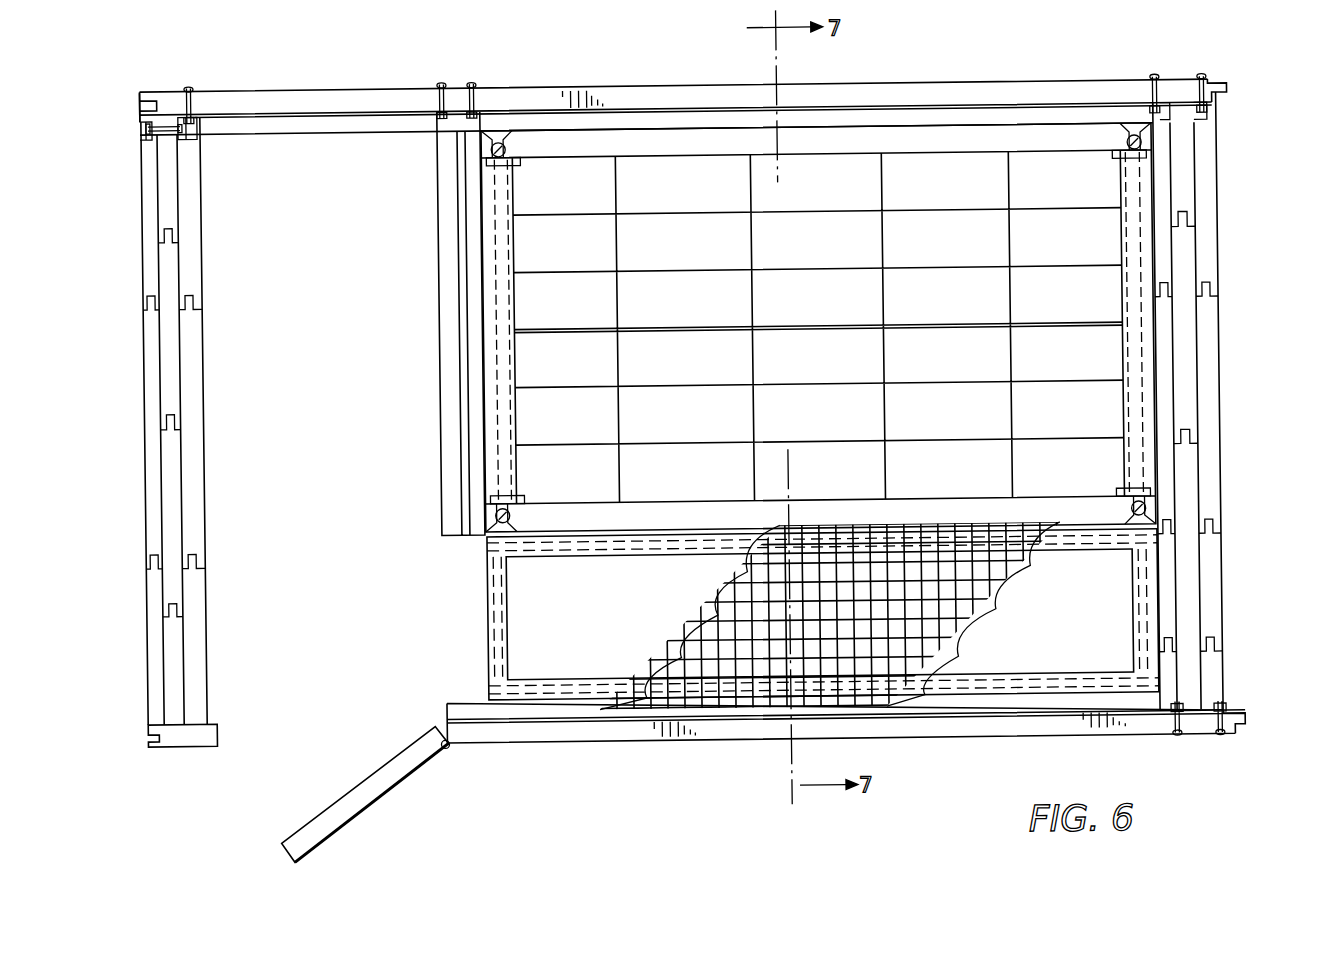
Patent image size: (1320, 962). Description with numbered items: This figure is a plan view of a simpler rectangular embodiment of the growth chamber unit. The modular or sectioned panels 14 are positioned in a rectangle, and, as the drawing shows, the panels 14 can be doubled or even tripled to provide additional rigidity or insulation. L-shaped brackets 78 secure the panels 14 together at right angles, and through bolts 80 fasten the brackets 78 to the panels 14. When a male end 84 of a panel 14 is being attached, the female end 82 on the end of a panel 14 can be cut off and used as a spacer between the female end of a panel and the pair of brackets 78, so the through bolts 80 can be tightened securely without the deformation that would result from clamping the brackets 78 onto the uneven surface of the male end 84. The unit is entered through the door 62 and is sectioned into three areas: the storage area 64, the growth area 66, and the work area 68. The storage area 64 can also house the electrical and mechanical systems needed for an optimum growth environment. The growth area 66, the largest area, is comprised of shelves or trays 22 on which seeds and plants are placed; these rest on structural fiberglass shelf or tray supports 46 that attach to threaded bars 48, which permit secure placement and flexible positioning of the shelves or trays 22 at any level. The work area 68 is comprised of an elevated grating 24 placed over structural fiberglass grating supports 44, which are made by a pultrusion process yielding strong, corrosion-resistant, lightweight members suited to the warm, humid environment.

The panel 14 is at (312, 88).
The shelf or tray 22 is at (1047, 186).
The elevated grating 24 is at (684, 625).
The grating support 44 is at (481, 628).
The shelf or tray support 46 is at (512, 364).
The threaded bar 48 is at (517, 512).
The door 62 is at (380, 792).
The storage area 64 is at (284, 258).
The growth area 66 is at (928, 319).
The work area 68 is at (1027, 630).
The bracket 78 is at (147, 121).
The through bolt 80 is at (192, 98).
The female end 82 is at (147, 85).
The male end 84 is at (1220, 100).